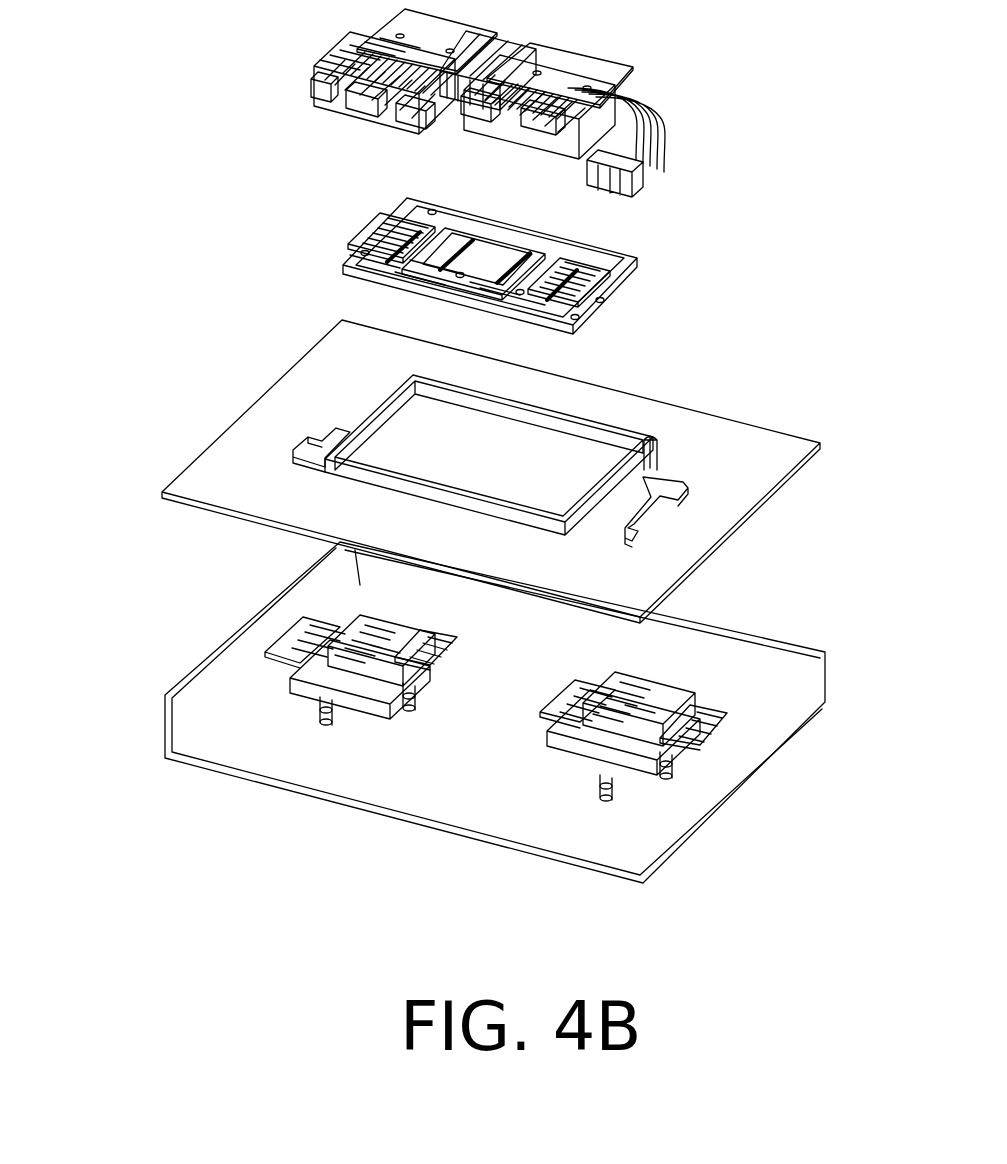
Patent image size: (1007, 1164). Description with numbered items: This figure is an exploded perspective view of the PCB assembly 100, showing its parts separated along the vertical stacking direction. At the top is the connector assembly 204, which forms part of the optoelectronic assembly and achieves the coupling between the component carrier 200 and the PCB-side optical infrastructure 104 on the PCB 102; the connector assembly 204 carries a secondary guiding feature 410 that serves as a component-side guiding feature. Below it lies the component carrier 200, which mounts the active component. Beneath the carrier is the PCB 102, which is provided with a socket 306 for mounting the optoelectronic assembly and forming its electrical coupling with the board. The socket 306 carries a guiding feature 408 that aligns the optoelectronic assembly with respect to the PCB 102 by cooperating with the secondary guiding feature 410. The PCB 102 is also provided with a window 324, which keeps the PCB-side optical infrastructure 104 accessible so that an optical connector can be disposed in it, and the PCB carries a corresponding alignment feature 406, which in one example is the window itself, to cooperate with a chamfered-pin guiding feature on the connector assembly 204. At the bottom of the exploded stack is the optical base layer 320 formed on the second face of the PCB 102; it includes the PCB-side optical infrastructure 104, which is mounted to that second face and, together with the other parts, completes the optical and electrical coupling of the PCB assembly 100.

The PCB assembly 100 is at (200, 117).
The connector assembly 204 is at (307, 65).
The secondary guiding feature 410 is at (620, 88).
The component carrier 200 is at (343, 265).
The PCB 102 is at (202, 468).
The socket 306 is at (588, 435).
The window 324 is at (357, 413).
The guiding feature 408 is at (622, 477).
The corresponding alignment feature 406 is at (662, 482).
The PCB-side optical infrastructure 104 is at (273, 627).
The optical base layer 320 is at (203, 695).